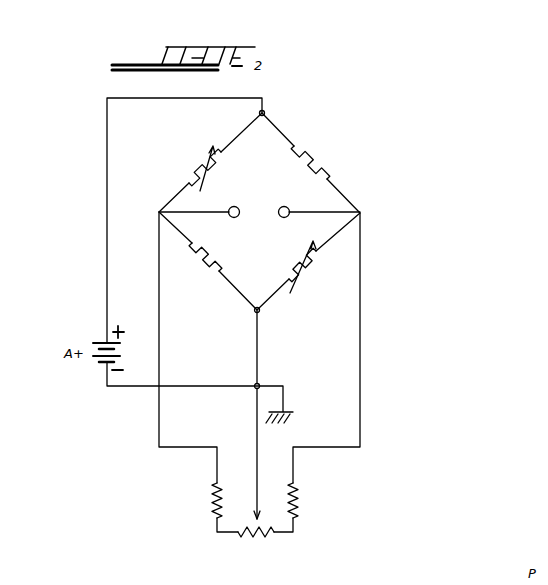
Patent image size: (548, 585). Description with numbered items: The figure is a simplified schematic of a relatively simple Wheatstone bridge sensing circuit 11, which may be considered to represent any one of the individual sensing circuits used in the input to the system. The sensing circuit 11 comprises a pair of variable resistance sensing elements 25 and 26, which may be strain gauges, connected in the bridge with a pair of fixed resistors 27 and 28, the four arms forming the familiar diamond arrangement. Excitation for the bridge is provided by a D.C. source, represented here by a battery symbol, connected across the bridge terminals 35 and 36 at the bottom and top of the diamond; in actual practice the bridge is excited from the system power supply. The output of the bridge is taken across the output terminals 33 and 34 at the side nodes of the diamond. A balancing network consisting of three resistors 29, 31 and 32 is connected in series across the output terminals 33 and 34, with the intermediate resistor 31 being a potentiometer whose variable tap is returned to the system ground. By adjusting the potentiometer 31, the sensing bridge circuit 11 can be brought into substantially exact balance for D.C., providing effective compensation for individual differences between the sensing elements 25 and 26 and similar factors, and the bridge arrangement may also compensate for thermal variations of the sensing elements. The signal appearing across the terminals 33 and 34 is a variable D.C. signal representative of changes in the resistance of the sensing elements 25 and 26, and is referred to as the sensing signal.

The sensing circuit 11 is at (327, 121).
The variable resistance sensing element 25 is at (200, 166).
The variable resistance sensing element 26 is at (305, 274).
The fixed resistor 27 is at (324, 170).
The fixed resistor 28 is at (210, 272).
The resistor 29 is at (216, 496).
The potentiometer 31 is at (256, 536).
The resistor 32 is at (296, 496).
The output terminal 33 is at (238, 204).
The output terminal 34 is at (287, 206).
The bridge terminal 35 is at (259, 312).
The bridge terminal 36 is at (264, 111).